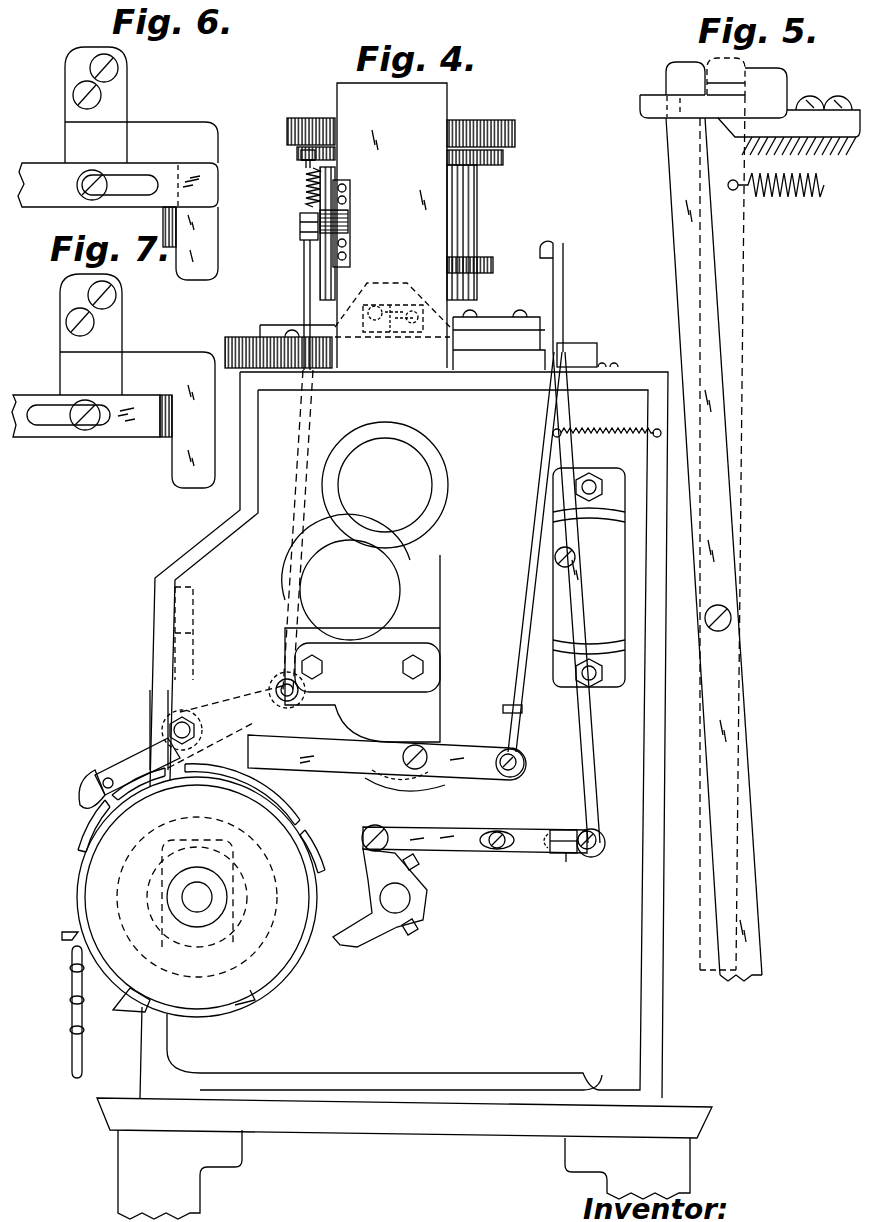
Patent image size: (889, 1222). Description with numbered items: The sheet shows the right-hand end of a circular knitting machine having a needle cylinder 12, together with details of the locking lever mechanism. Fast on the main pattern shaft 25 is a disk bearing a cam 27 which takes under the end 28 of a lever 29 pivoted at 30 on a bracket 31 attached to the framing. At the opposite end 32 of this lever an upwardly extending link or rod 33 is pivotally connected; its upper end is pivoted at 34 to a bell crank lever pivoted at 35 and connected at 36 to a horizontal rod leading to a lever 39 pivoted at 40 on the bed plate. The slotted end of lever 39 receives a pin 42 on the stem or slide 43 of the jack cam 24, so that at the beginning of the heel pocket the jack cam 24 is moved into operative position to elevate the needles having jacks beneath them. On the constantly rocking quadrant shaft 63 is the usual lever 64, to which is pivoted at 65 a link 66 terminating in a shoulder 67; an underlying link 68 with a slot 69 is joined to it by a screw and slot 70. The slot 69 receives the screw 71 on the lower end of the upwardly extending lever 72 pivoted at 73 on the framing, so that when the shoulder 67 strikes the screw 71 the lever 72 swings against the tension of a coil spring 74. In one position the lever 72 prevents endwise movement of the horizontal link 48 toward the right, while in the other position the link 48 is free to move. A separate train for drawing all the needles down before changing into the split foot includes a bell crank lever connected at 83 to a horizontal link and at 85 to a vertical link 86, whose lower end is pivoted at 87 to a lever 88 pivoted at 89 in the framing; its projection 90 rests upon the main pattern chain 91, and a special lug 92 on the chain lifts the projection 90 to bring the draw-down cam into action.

In FIG. 4, the needle cylinder 12 is at (478, 203).
In FIG. 4, the jack cam 24 is at (372, 300).
In FIG. 4, the main pattern shaft 25 is at (200, 882).
In FIG. 4, the cam 27 is at (222, 755).
In FIG. 4, the end of lever 28 is at (258, 768).
In FIG. 4, the lever 29 is at (408, 792).
In FIG. 4, the pivot 30 is at (415, 745).
In FIG. 4, the bracket 31 is at (432, 690).
In FIG. 4, the opposite end of lever 32 is at (520, 757).
In FIG. 4, the link or rod 33 is at (524, 574).
In FIG. 4, the pivotal connection 34 is at (533, 330).
In FIG. 4, the bell crank lever pivot 35 is at (564, 290).
In FIG. 4, the pivotal connection 36 is at (540, 248).
In FIG. 4, the lever 39 is at (494, 320).
In FIG. 4, the pivot 40 is at (470, 330).
In FIG. 4, the pin 42 is at (408, 300).
In FIG. 4, the stem or slide 43 is at (385, 333).
In FIG. 6, the horizontal link 48 is at (47, 165).
In FIG. 7, the horizontal link 48 is at (42, 430).
In FIG. 5, the horizontal link 48 is at (724, 94).
In FIG. 4, the quadrant shaft 63 is at (412, 905).
In FIG. 4, the lever 64 is at (358, 880).
In FIG. 4, the pivotal connection 65 is at (366, 832).
In FIG. 4, the link 66 is at (465, 852).
In FIG. 4, the shoulder 67 is at (548, 852).
In FIG. 4, the link 68 is at (558, 832).
In FIG. 4, the slot 69 is at (570, 856).
In FIG. 4, the screw and slot 70 is at (498, 832).
In FIG. 4, the screw 71 is at (612, 826).
In FIG. 6, the lever 72 is at (163, 226).
In FIG. 7, the lever 72 is at (163, 437).
In FIG. 5, the lever 72 is at (683, 66).
In FIG. 4, the lever 72 is at (580, 721).
In FIG. 5, the pivot 73 is at (733, 618).
In FIG. 4, the pivot 73 is at (575, 551).
In FIG. 5, the coil spring 74 is at (797, 200).
In FIG. 4, the coil spring 74 is at (618, 438).
In FIG. 4, the pivotal connection 83 is at (299, 155).
In FIG. 4, the pivotal connection 85 is at (299, 226).
In FIG. 4, the vertical link 86 is at (304, 298).
In FIG. 4, the pivotal connection 87 is at (276, 680).
In FIG. 4, the lever 88 is at (128, 762).
In FIG. 4, the pivot 89 is at (168, 728).
In FIG. 4, the projection 90 is at (88, 812).
In FIG. 4, the main pattern chain 91 is at (72, 1060).
In FIG. 4, the special lug 92 is at (62, 935).